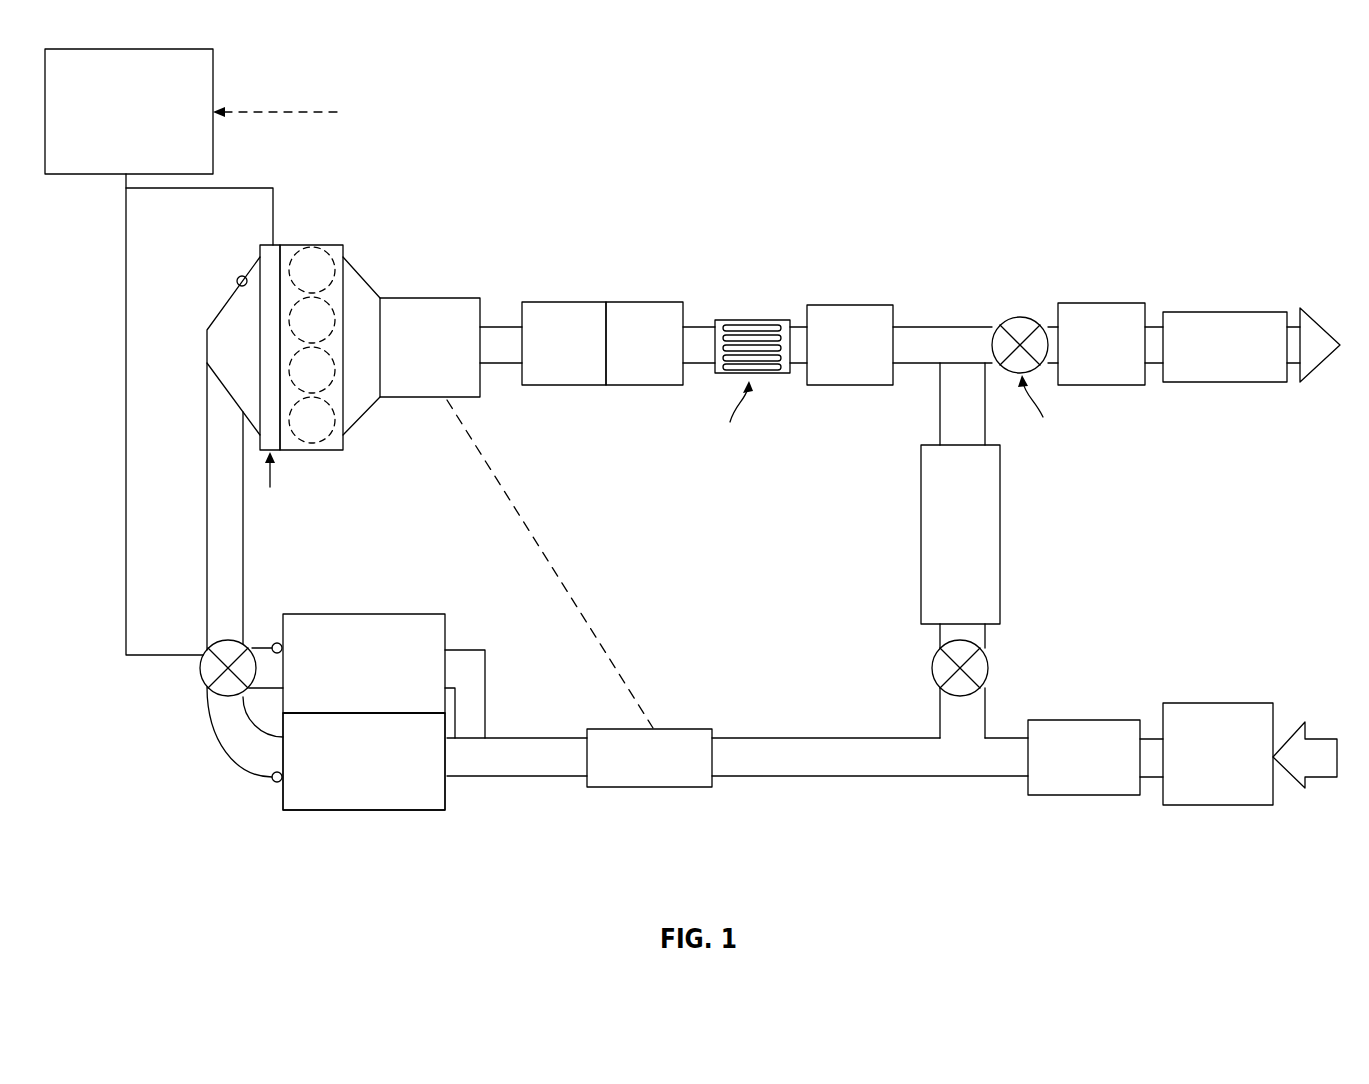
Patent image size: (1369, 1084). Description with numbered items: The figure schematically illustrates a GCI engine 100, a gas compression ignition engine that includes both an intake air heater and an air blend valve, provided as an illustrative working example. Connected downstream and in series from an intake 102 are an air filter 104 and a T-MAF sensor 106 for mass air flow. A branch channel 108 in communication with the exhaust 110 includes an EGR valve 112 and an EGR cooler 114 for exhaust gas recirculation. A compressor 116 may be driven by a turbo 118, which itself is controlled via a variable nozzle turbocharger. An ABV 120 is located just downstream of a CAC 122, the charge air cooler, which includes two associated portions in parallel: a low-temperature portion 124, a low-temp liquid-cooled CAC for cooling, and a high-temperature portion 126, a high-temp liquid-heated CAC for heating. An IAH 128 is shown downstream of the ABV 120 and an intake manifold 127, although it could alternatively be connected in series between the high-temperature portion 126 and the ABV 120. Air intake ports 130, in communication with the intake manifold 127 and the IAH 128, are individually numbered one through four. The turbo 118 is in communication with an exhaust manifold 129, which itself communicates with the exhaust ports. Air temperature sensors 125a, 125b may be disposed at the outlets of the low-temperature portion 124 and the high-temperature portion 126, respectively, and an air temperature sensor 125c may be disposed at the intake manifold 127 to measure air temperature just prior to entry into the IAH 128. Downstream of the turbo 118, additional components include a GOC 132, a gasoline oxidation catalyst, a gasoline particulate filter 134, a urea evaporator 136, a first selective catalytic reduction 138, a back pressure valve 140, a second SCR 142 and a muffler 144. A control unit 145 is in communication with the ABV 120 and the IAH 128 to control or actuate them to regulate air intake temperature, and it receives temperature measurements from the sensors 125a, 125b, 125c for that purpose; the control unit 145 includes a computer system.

The GCI engine 100 is at (518, 896).
The intake 102 is at (1328, 778).
The air filter 104 is at (1218, 807).
The T-MAF sensor 106 is at (1085, 797).
The branch channel 108 is at (940, 722).
The exhaust 110 is at (1320, 325).
The EGR valve 112 is at (932, 668).
The EGR cooler 114 is at (1002, 535).
The compressor 116 is at (677, 729).
The turbo 118 is at (430, 298).
The ABV 120 is at (205, 680).
The CAC 122 is at (358, 824).
The low-temperature portion 124 is at (433, 812).
The air temperature sensor 125a is at (277, 783).
The air temperature sensor 125b is at (277, 643).
The air temperature sensor 125c is at (238, 277).
The high-temperature portion 126 is at (363, 614).
The intake manifold 127 is at (220, 345).
The IAH 128 is at (275, 263).
The exhaust manifold 129 is at (352, 293).
The air intake ports 130 is at (312, 452).
The GOC 132 is at (565, 300).
The gasoline particulate filter 134 is at (645, 300).
The urea evaporator 136 is at (753, 320).
The first selective catalytic reduction 138 is at (850, 305).
The back pressure valve 140 is at (1018, 315).
The second SCR 142 is at (1100, 303).
The muffler 144 is at (1220, 312).
The control unit 145 is at (112, 177).